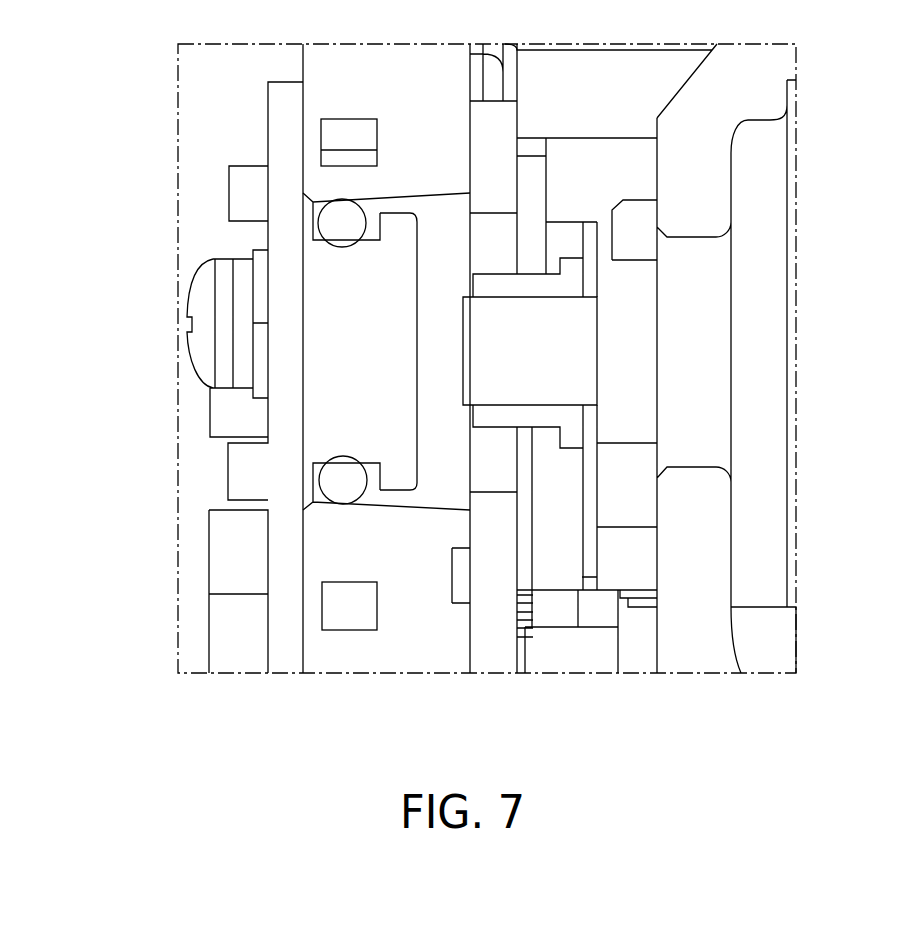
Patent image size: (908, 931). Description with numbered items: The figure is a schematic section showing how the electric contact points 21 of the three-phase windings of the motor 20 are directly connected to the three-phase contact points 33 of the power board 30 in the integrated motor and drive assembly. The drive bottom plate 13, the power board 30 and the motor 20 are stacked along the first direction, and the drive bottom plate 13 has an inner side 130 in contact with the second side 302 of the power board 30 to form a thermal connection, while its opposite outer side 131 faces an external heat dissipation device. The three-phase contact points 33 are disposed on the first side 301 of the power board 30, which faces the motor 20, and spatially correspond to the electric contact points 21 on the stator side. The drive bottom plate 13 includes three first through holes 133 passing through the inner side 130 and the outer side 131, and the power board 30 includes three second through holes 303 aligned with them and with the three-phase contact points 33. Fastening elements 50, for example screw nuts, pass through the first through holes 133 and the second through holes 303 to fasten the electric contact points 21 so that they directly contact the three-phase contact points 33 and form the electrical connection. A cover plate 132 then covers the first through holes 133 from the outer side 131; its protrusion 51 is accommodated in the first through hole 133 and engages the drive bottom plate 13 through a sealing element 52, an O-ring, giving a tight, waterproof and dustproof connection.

The drive bottom plate 13 is at (410, 642).
The inner side 130 is at (470, 157).
The outer side 131 is at (302, 65).
The cover plate 132 is at (280, 133).
The first through holes 133 is at (437, 503).
The motor 20 is at (698, 520).
The electric contact points 21 is at (552, 343).
The power board 30 is at (535, 213).
The first side 301 is at (517, 185).
The second side 302 is at (468, 201).
The second through holes 303 is at (500, 445).
The three-phase contact points 33 is at (587, 280).
The fastening elements 50 is at (502, 285).
The protrusion 51 is at (348, 376).
The sealing element 52 is at (342, 483).